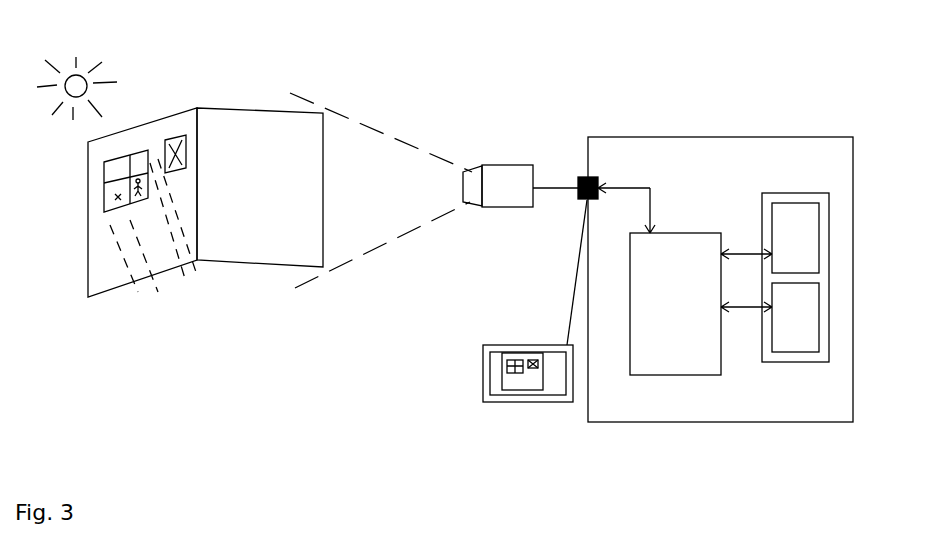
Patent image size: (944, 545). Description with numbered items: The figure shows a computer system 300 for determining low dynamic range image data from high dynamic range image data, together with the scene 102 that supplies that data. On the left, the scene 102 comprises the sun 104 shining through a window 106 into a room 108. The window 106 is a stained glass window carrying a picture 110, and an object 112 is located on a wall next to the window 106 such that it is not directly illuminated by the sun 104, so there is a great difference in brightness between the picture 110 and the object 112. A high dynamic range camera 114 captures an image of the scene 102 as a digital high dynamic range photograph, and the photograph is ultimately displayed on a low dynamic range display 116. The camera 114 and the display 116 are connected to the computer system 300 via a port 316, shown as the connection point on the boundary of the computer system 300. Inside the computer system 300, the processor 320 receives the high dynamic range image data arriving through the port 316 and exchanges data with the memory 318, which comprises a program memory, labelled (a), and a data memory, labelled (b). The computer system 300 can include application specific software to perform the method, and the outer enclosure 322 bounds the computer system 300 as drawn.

The scene 102 is at (173, 164).
The sun 104 is at (92, 80).
The window 106 is at (108, 195).
The room 108 is at (212, 122).
The picture 110 is at (126, 199).
The object 112 is at (177, 137).
The high dynamic range camera 114 is at (508, 208).
The low dynamic range display 116 is at (543, 345).
The computer system 300 is at (708, 263).
The port 316 is at (583, 177).
The memory 318 is at (805, 193).
The processor 320 is at (667, 375).
The computer housing 322 is at (733, 422).